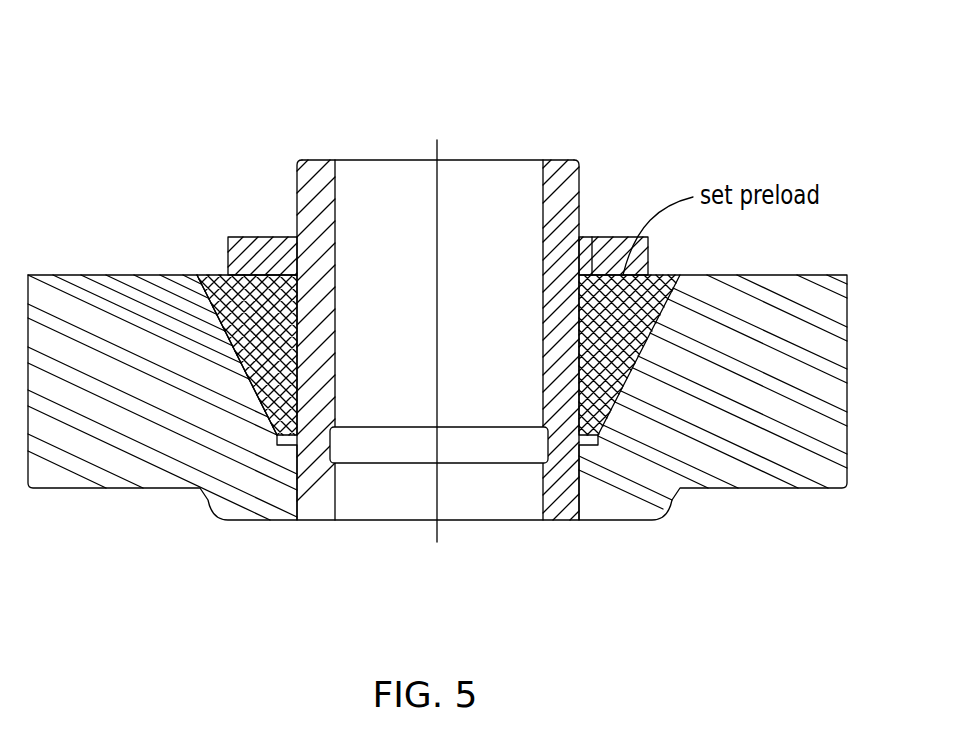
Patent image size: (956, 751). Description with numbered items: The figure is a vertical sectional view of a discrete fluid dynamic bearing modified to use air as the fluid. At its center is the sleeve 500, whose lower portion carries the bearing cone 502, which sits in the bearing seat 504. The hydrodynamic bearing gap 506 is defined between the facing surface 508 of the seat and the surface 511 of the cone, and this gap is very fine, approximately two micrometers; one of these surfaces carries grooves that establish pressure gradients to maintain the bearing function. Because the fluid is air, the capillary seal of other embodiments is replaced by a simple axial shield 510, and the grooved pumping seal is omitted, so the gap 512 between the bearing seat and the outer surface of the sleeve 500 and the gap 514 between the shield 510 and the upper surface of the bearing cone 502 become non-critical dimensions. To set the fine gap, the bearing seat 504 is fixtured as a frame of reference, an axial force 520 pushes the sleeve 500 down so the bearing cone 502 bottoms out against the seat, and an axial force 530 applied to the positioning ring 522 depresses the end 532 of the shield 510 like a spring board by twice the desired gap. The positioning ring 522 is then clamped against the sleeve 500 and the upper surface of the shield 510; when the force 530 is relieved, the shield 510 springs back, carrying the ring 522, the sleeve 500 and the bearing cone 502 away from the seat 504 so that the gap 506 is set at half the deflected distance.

The sleeve 500 is at (313, 503).
The bearing cone 502 is at (250, 329).
The bearing seat 504 is at (67, 473).
The hydrodynamic bearing gap 506 is at (222, 323).
The bearing seat surface 508 is at (100, 273).
The axial shield 510 is at (672, 278).
The bearing cone surface 511 is at (333, 262).
The gap 512 is at (610, 497).
The gap 514 is at (622, 240).
The axial force 520 is at (559, 144).
The positioning ring 522 is at (259, 243).
The axial force 530 is at (230, 228).
The end of the shield 532 is at (592, 238).